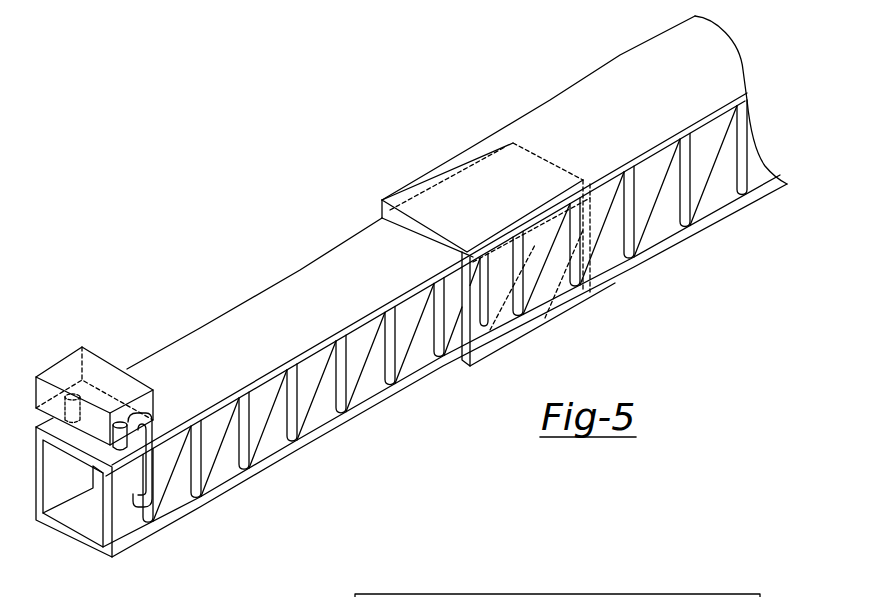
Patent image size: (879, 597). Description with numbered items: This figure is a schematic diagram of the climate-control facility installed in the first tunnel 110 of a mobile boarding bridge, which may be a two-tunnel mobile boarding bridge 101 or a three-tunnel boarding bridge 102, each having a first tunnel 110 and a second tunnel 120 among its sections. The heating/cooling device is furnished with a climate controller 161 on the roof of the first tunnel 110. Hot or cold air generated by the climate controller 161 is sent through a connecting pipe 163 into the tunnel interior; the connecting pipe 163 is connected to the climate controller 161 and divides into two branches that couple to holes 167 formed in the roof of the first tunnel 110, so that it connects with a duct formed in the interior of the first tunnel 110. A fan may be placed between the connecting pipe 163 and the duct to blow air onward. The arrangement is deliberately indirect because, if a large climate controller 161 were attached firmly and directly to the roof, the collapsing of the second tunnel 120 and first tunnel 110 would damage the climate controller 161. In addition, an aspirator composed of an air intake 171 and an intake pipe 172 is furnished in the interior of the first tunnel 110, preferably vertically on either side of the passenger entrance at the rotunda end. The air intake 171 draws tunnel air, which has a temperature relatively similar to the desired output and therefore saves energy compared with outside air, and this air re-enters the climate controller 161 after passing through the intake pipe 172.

The first tunnel 110 is at (276, 306).
The second tunnel 120 is at (612, 78).
The 2-tunnel mobile boarding bridge 101 is at (498, 192).
The 3-tunnel boarding bridge 102 is at (538, 273).
The climate controller 161 is at (55, 373).
The connecting pipe 163 is at (128, 440).
The holes 167 is at (117, 452).
The air intake 171 is at (113, 492).
The intake pipe 172 is at (146, 483).